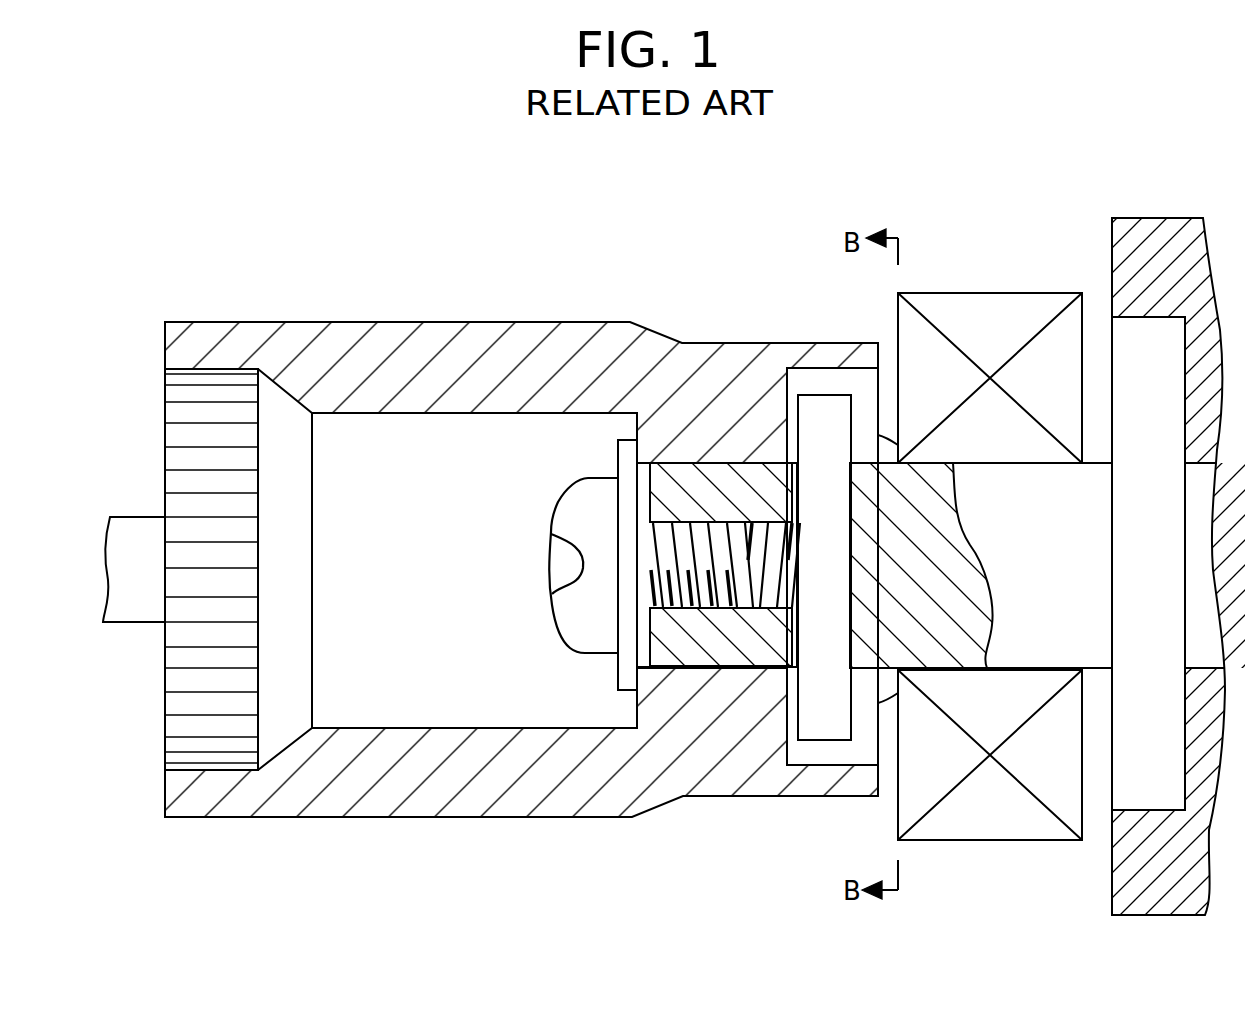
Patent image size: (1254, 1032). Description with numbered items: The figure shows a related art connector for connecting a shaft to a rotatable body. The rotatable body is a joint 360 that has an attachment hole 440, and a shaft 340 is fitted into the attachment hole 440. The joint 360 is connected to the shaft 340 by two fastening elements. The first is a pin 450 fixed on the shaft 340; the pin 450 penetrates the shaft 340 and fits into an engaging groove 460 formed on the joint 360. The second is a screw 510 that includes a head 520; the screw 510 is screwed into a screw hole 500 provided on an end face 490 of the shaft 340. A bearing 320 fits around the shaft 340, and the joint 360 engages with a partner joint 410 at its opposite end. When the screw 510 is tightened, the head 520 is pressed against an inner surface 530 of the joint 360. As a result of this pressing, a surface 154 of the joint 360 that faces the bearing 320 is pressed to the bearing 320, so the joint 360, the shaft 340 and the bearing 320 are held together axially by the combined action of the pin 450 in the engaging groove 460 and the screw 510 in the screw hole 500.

The joint 360 is at (441, 322).
The partner joint 410 is at (165, 452).
The inner surface 530 is at (618, 452).
The end face 490 is at (640, 500).
The head 520 is at (549, 572).
The attachment hole 440 is at (748, 467).
The screw 510 is at (712, 520).
The shaft 340 is at (748, 660).
The screw hole 500 is at (683, 610).
The engaging groove 460 is at (835, 380).
The pin 450 is at (855, 420).
The surface 154 is at (898, 450).
The bearing 320 is at (985, 840).